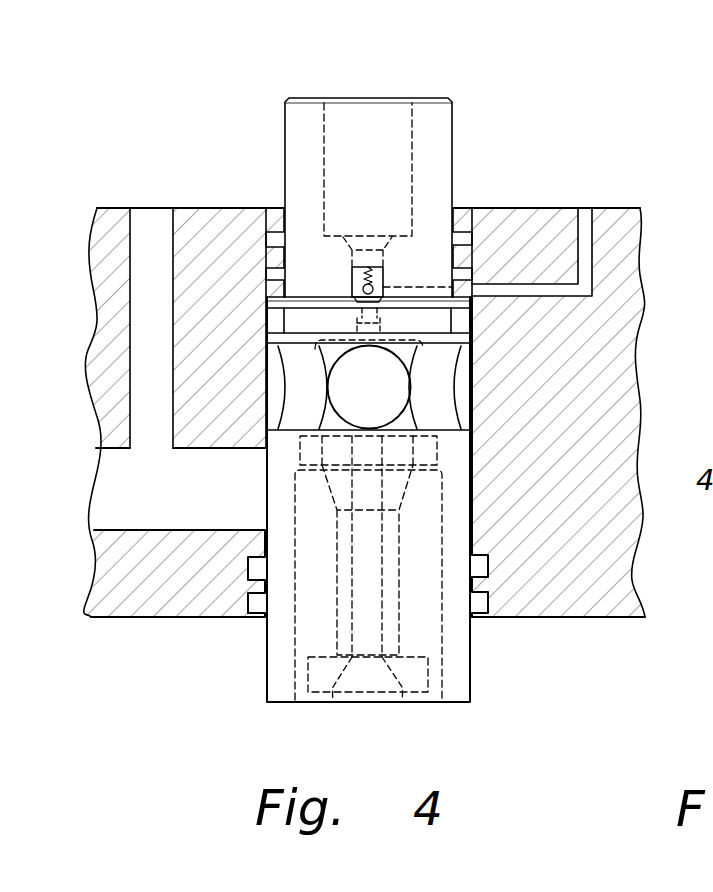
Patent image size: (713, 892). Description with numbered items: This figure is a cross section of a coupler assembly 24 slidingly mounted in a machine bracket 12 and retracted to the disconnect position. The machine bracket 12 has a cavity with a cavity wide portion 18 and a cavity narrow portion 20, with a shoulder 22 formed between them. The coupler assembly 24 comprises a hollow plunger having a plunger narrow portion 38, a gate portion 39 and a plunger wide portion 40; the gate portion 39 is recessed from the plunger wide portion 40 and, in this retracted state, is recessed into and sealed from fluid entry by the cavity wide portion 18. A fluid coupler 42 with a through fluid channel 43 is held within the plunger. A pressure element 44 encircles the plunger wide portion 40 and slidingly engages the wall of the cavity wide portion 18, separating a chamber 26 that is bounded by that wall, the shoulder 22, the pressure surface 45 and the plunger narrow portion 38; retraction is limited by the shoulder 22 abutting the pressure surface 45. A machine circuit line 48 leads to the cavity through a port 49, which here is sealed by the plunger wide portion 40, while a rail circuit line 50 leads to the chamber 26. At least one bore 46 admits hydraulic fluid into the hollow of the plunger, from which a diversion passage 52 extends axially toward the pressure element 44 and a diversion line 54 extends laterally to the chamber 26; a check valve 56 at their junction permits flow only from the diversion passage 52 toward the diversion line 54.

The machine bracket 12 is at (565, 540).
The cavity wide portion 18 is at (471, 403).
The cavity narrow portion 20 is at (463, 237).
The shoulder 22 is at (472, 282).
The coupler assembly 24 is at (428, 80).
The chamber 26 is at (268, 290).
The plunger narrow portion 38 is at (438, 130).
The gate portion 39 is at (266, 381).
The plunger wide portion 40 is at (470, 688).
The fluid coupler 42 is at (282, 608).
The fluid channel 43 is at (370, 627).
The pressure element 44 is at (472, 318).
The pressure surface 45 is at (275, 292).
The bore 46 is at (383, 380).
The machine circuit line 48 is at (203, 495).
The port 49 is at (273, 488).
The rail circuit line 50 is at (585, 253).
The diversion passage 52 is at (358, 317).
The diversion line 54 is at (420, 283).
The check valve 56 is at (367, 268).